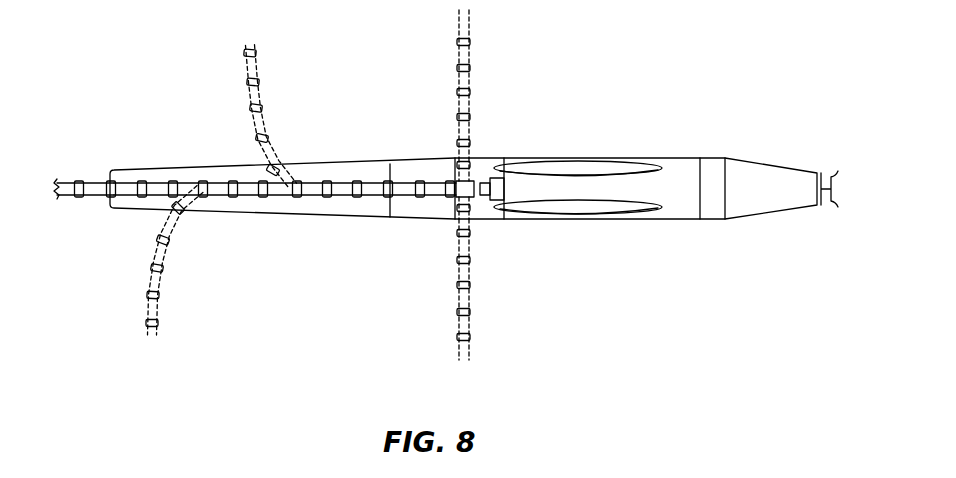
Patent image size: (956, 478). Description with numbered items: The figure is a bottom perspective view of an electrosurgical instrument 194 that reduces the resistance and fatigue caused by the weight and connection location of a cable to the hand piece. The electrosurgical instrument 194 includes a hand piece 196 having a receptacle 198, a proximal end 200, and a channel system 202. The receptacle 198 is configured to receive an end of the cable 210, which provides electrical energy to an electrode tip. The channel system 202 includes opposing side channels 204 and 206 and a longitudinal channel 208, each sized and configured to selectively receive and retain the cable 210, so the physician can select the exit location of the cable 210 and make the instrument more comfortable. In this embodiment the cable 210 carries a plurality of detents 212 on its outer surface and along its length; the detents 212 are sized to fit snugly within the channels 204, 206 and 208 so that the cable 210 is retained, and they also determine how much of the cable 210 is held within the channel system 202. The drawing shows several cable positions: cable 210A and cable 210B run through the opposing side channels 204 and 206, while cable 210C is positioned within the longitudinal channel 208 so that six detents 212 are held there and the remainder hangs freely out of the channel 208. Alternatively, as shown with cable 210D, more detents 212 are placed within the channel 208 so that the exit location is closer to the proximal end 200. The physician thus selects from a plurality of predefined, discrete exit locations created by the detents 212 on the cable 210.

The electrosurgical instrument 194 is at (698, 65).
The hand piece 196 is at (635, 162).
The receptacle 198 is at (511, 188).
The proximal end 200 is at (128, 169).
The channel system 202 is at (424, 202).
The side channel 204 is at (466, 184).
The side channel 206 is at (472, 198).
The longitudinal channel 208 is at (328, 199).
The cable 210 is at (92, 181).
The cable 210A is at (471, 52).
The cable 210B is at (471, 297).
The cable 210C is at (266, 95).
The cable 210D is at (163, 280).
The detents 212 is at (112, 198).